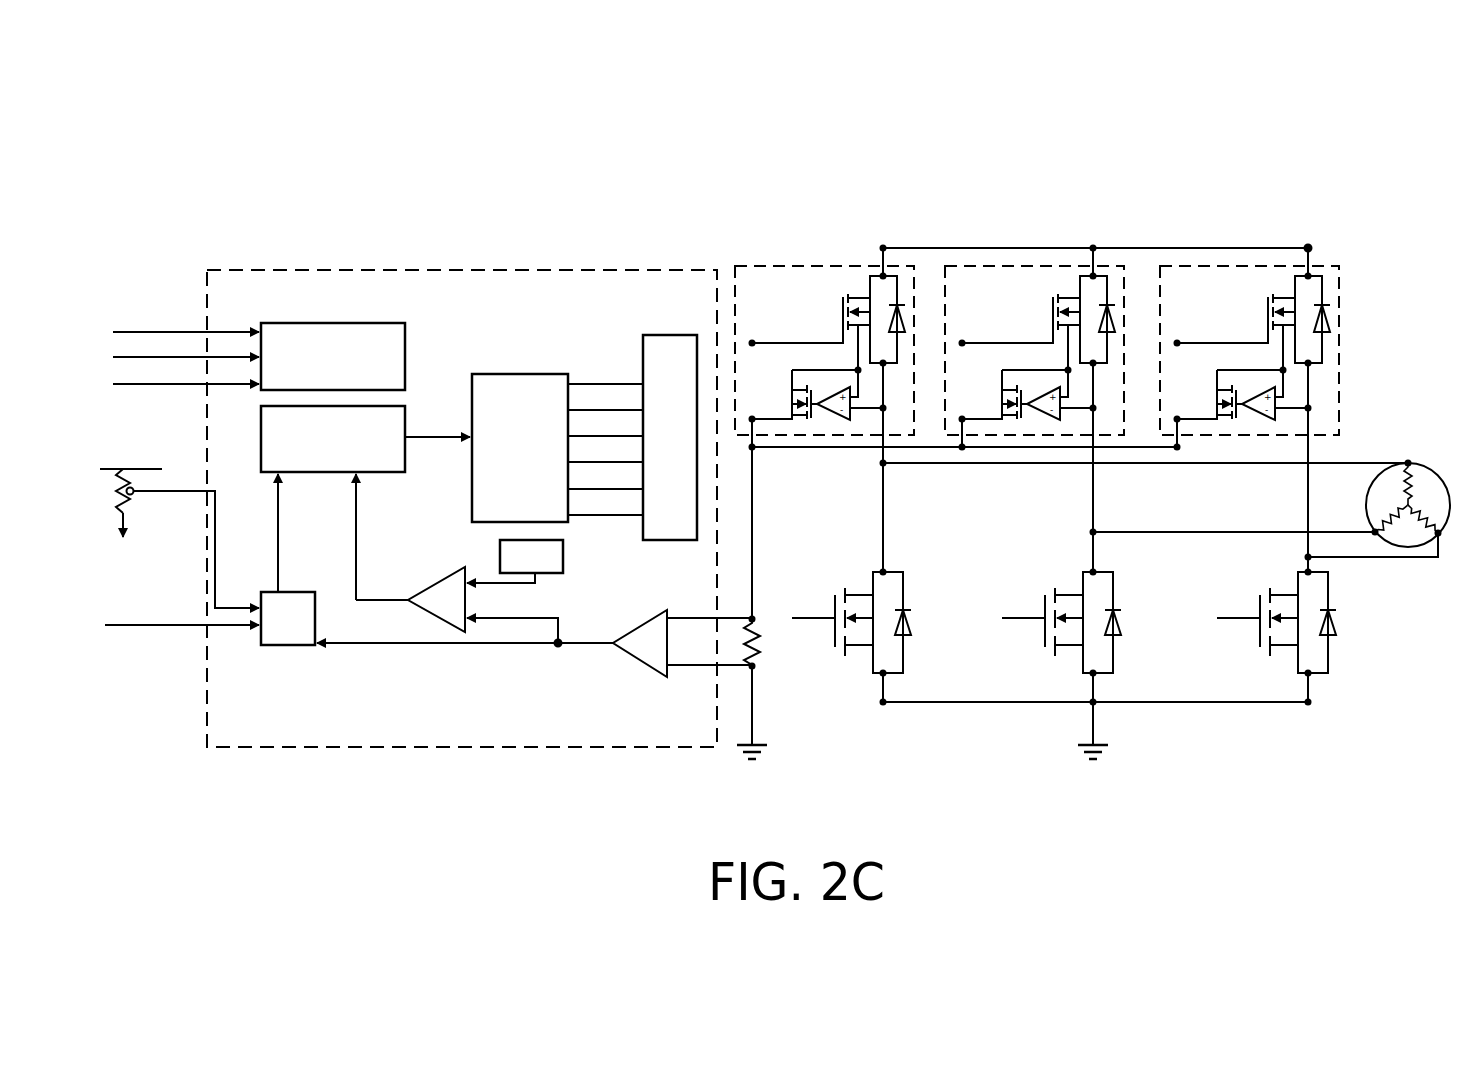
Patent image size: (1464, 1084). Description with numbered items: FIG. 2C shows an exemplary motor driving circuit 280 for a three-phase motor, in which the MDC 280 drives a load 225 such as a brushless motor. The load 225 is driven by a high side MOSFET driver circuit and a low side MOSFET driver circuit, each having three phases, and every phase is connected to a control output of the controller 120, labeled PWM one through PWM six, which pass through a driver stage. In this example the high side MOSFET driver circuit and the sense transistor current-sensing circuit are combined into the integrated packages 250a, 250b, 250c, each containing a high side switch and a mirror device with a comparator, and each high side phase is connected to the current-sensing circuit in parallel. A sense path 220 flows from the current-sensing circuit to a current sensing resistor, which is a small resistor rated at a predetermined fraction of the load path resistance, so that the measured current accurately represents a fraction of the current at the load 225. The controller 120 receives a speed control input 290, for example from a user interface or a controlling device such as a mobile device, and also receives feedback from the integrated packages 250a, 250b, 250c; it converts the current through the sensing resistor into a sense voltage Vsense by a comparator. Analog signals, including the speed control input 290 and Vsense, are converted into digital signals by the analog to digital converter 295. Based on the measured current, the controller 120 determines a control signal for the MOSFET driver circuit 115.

The MOSFET driver circuit 115 is at (781, 153).
The controller 120 is at (458, 324).
The sense path 220 is at (779, 603).
The load 225 is at (1405, 462).
The integrated package 250a is at (848, 263).
The integrated package 250b is at (998, 263).
The integrated package 250c is at (1207, 263).
The motor driving circuit 280 is at (341, 149).
The speed control input 290 is at (162, 627).
The analog to digital converter 295 is at (290, 647).